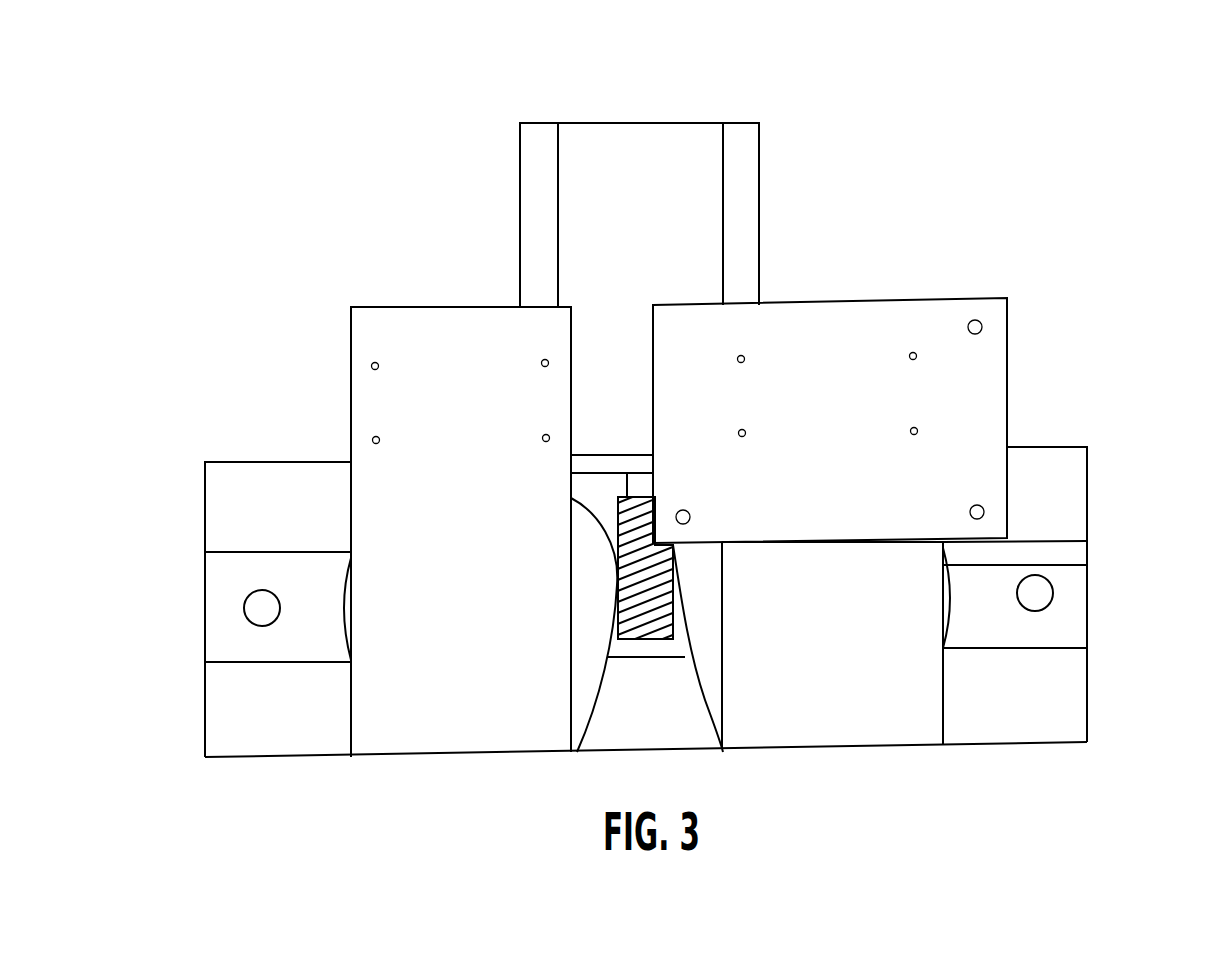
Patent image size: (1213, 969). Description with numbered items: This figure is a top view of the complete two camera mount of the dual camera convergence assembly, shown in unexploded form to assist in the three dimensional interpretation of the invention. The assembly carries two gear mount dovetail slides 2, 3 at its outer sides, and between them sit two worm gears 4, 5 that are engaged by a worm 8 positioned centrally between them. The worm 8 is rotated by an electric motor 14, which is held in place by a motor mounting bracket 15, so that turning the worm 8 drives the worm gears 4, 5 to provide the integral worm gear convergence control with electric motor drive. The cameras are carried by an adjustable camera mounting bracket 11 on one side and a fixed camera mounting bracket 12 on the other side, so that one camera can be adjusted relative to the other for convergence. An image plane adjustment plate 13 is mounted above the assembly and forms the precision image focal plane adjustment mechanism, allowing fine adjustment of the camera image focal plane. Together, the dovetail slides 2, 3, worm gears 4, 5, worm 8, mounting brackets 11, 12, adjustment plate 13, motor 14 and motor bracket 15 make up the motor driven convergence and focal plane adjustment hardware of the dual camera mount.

The gear mount dovetail slide 2 is at (1063, 615).
The gear mount dovetail slide 3 is at (228, 648).
The worm gear 4 is at (710, 663).
The worm gear 5 is at (590, 677).
The worm 8 is at (650, 639).
The adjustable camera mounting bracket 11 is at (913, 720).
The fixed camera mounting bracket 12 is at (420, 297).
The image plane adjustment plate 13 is at (1011, 357).
The electric motor 14 is at (650, 105).
The motor mounting bracket 15 is at (618, 462).